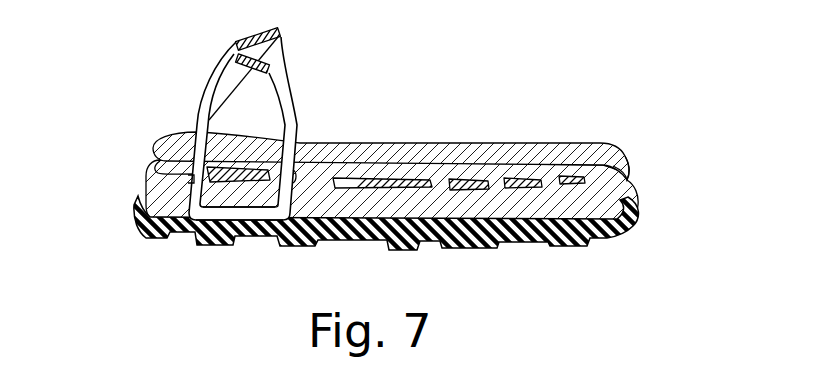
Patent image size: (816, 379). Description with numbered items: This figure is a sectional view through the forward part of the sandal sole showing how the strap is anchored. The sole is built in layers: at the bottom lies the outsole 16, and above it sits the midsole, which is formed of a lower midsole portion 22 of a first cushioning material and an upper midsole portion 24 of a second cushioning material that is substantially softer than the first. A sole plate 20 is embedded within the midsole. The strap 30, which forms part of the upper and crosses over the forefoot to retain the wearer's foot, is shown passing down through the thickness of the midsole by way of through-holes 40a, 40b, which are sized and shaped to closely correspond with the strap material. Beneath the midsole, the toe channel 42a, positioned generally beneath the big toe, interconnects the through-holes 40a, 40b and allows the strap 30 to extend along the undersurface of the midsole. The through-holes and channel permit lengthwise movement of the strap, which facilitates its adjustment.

The outsole 16 is at (580, 246).
The sole plate 20 is at (478, 180).
The lower midsole portion 22 is at (627, 178).
The upper midsole portion 24 is at (592, 142).
The strap 30 is at (204, 69).
The through-hole 40a is at (192, 174).
The through-hole 40b is at (292, 173).
The toe channel 42a is at (248, 218).